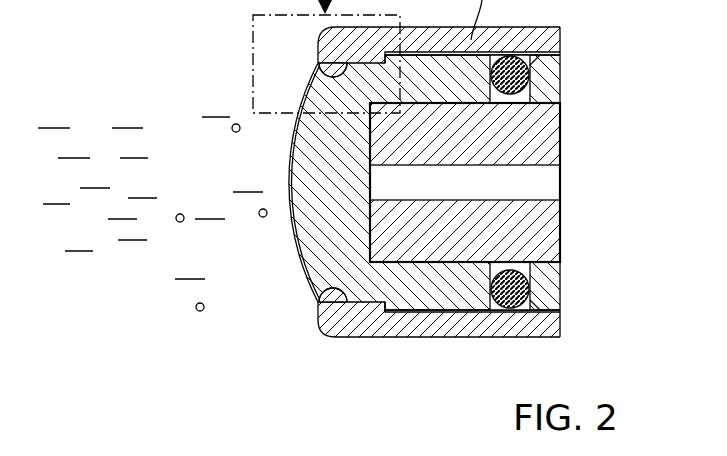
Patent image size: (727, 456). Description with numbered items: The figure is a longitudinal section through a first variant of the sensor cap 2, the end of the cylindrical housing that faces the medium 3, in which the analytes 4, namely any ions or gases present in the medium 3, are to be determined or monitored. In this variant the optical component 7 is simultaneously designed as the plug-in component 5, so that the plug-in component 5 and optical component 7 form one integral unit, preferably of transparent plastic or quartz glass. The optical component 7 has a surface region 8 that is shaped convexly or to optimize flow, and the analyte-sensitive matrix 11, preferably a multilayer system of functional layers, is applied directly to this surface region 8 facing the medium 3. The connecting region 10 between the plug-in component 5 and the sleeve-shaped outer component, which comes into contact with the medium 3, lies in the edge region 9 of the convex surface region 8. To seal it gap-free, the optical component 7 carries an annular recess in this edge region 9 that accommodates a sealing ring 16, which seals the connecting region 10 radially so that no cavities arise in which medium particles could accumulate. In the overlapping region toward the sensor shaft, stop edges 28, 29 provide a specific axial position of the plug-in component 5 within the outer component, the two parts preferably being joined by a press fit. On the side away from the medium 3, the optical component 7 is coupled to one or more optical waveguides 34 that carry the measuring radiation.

The sensor cap 2 is at (220, 241).
The medium 3 is at (95, 230).
The analyte 4 is at (197, 312).
The plug-in component 5 is at (310, 148).
The optical component 7 is at (310, 148).
The surface region 8 is at (283, 252).
The edge region 9 is at (310, 86).
The connecting region 10 is at (335, 292).
The analyte-sensitive matrix 11 is at (288, 170).
The sealing ring 16 is at (318, 293).
The stop edge 28 is at (388, 311).
The stop edge 29 is at (383, 303).
The optical waveguide 34 is at (532, 142).